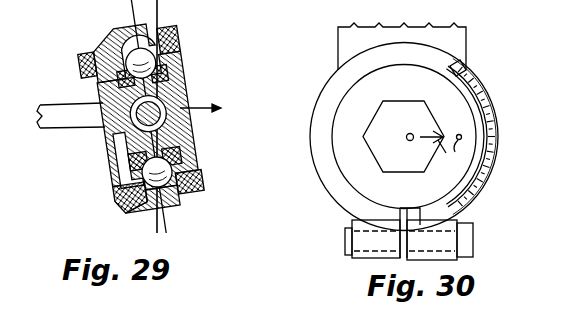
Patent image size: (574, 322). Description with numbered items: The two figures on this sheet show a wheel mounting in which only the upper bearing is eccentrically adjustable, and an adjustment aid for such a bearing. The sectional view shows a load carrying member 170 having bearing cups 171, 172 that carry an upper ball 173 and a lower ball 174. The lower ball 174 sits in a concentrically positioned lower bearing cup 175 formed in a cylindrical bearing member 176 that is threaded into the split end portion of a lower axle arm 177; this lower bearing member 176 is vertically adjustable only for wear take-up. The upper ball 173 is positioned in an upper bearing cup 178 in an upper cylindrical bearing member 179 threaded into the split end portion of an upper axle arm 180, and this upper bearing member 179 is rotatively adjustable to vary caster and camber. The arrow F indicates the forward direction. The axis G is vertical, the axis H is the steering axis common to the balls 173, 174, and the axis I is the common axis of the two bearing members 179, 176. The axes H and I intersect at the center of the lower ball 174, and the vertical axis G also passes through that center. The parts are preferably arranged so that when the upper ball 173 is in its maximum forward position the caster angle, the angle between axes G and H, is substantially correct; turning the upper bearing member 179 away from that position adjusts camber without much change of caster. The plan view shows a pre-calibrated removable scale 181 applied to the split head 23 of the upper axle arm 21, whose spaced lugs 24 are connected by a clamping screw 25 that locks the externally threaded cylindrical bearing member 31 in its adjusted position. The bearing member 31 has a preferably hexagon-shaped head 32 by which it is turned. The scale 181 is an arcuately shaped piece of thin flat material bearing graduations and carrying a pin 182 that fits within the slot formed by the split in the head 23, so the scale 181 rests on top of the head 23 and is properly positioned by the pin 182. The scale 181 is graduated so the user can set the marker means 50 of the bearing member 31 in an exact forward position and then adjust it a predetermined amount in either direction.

In FIG. 29, the load carrying member 170 is at (186, 129).
In FIG. 29, the bearing cup 171 is at (174, 72).
In FIG. 29, the bearing cup 172 is at (184, 153).
In FIG. 29, the upper ball 173 is at (172, 60).
In FIG. 29, the lower ball 174 is at (193, 173).
In FIG. 29, the lower bearing cup 175 is at (121, 198).
In FIG. 29, the cylindrical bearing member 176 is at (148, 210).
In FIG. 29, the lower axle arm 177 is at (201, 190).
In FIG. 29, the upper bearing cup 178 is at (174, 37).
In FIG. 29, the upper cylindrical bearing member 179 is at (105, 70).
In FIG. 29, the upper axle arm 180 is at (92, 54).
In FIG. 29, the vertical axis G is at (158, 8).
In FIG. 29, the steering axis H is at (120, 22).
In FIG. 29, the common axis of bearing members I is at (123, 2).
In FIG. 29, the forward direction arrow F is at (196, 108).
In FIG. 30, the upper axle arm 21 is at (467, 33).
In FIG. 30, the split head 23 is at (338, 203).
In FIG. 30, the lugs 24 is at (428, 240).
In FIG. 30, the clamping screw 25 is at (352, 236).
In FIG. 30, the cylindrical bearing member 31 is at (362, 98).
In FIG. 30, the head 32 is at (368, 131).
In FIG. 30, the marks 50 is at (447, 155).
In FIG. 30, the pre-calibrated removable scale 181 is at (458, 216).
In FIG. 30, the pin 182 is at (400, 216).